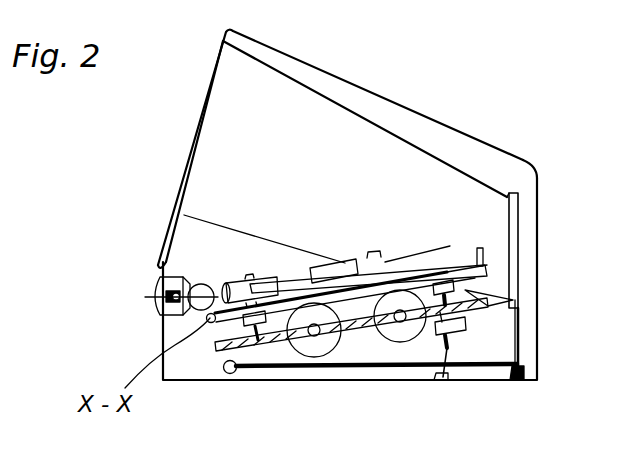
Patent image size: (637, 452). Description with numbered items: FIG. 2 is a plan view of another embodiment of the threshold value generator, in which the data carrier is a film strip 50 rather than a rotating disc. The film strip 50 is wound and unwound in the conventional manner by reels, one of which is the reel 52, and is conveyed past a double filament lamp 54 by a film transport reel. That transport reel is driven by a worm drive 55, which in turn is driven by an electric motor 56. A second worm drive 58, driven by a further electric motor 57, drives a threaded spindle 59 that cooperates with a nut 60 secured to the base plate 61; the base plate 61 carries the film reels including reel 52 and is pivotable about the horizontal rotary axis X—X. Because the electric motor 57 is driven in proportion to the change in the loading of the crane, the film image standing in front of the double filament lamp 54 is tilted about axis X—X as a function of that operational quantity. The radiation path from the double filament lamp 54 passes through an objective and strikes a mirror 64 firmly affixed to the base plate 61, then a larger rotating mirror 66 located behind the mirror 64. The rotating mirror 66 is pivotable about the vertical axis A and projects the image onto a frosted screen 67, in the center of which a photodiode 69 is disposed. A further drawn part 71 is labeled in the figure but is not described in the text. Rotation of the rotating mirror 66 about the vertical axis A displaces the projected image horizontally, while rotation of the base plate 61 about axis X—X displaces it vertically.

The film strip 50 is at (287, 280).
The reel 52 is at (320, 268).
The double filament lamp 54 is at (155, 295).
The worm drive 55 is at (273, 368).
The electric motor 56 is at (322, 350).
The electric motor 57 is at (397, 345).
The second worm drive 58 is at (412, 347).
The threaded spindle 59 is at (453, 338).
The nut 60 is at (434, 258).
The base plate 61 is at (357, 255).
The mirror 64 is at (483, 252).
The rotating mirror 66 is at (513, 209).
The frosted screen 67 is at (214, 58).
The photodiode 69 is at (205, 118).
The guide rod 71 is at (355, 368).
The vertical axis A is at (520, 333).